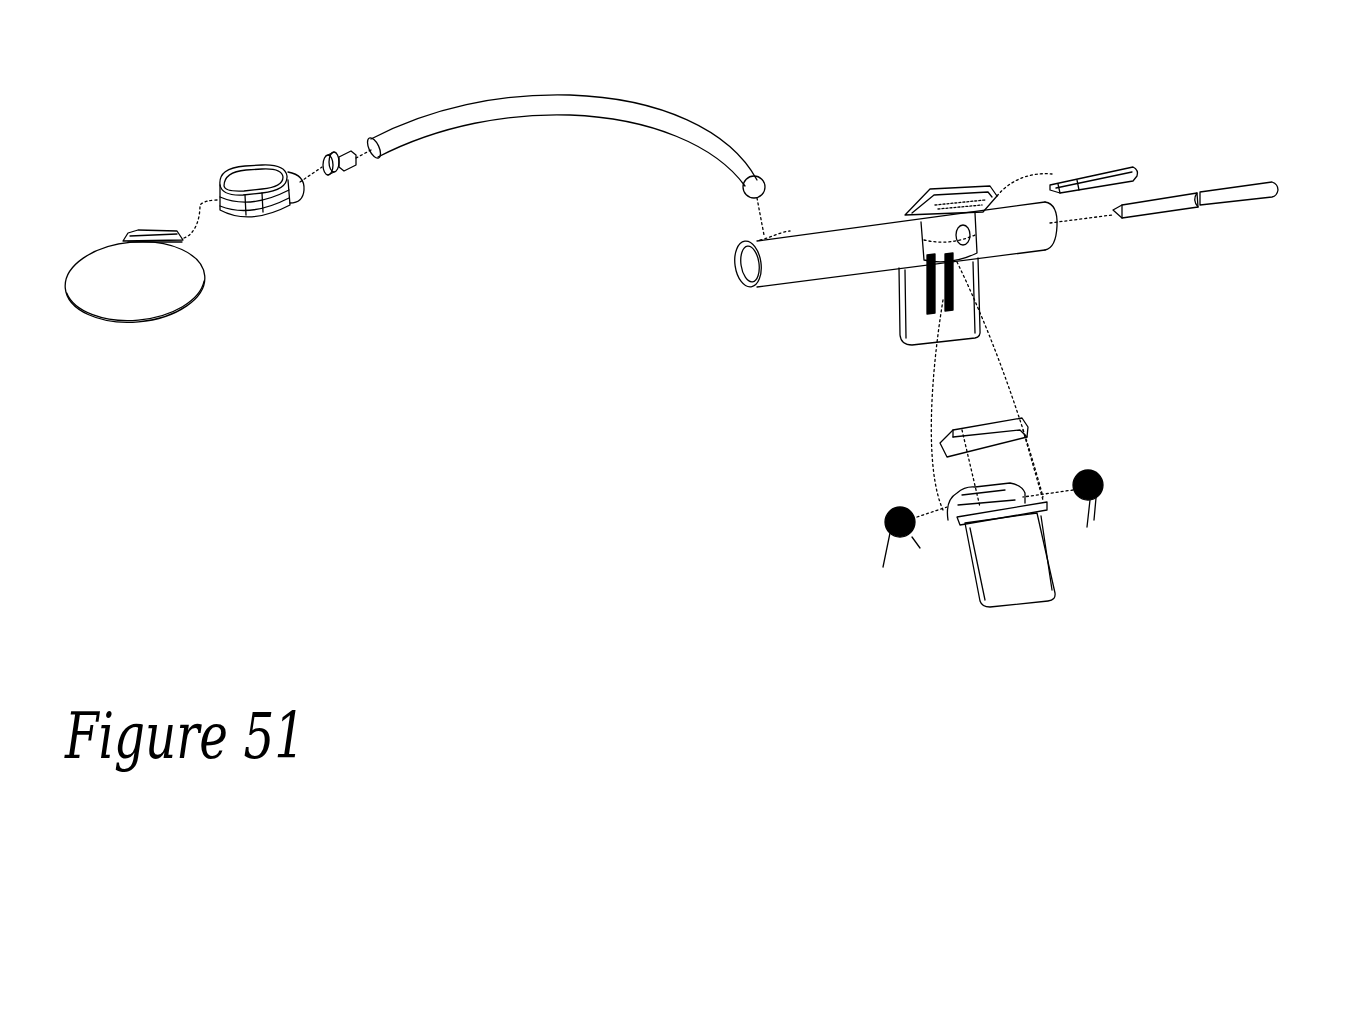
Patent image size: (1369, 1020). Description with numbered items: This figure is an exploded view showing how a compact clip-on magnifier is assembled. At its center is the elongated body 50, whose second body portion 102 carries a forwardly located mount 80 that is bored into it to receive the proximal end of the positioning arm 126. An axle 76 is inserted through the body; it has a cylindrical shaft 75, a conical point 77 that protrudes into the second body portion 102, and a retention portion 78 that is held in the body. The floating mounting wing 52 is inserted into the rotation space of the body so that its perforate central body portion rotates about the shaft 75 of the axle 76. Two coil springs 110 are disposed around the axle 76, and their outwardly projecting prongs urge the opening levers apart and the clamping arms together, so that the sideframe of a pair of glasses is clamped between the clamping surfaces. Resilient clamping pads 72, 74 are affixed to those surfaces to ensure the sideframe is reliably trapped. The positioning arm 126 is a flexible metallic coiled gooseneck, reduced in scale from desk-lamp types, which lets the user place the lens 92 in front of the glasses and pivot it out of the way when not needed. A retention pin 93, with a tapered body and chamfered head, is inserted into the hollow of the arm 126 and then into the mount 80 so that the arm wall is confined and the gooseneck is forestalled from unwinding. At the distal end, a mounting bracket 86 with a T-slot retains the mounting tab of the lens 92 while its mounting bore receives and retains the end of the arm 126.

The elongated body 50 is at (843, 290).
The floating mounting wing 52 is at (1048, 520).
The resilient clamping pad 72 is at (1132, 170).
The resilient clamping pad 74 is at (975, 405).
The shaft 75 is at (1185, 240).
The axle 76 is at (1167, 207).
The conical point 77 is at (1122, 240).
The retention portion 78 is at (1248, 222).
The mount 80 is at (774, 221).
The mounting bracket 86 is at (258, 218).
The lens 92 is at (147, 287).
The retention pin 93 is at (345, 165).
The second body portion 102 is at (805, 243).
The coil springs 110 is at (889, 512).
The positioning arm 126 is at (463, 117).